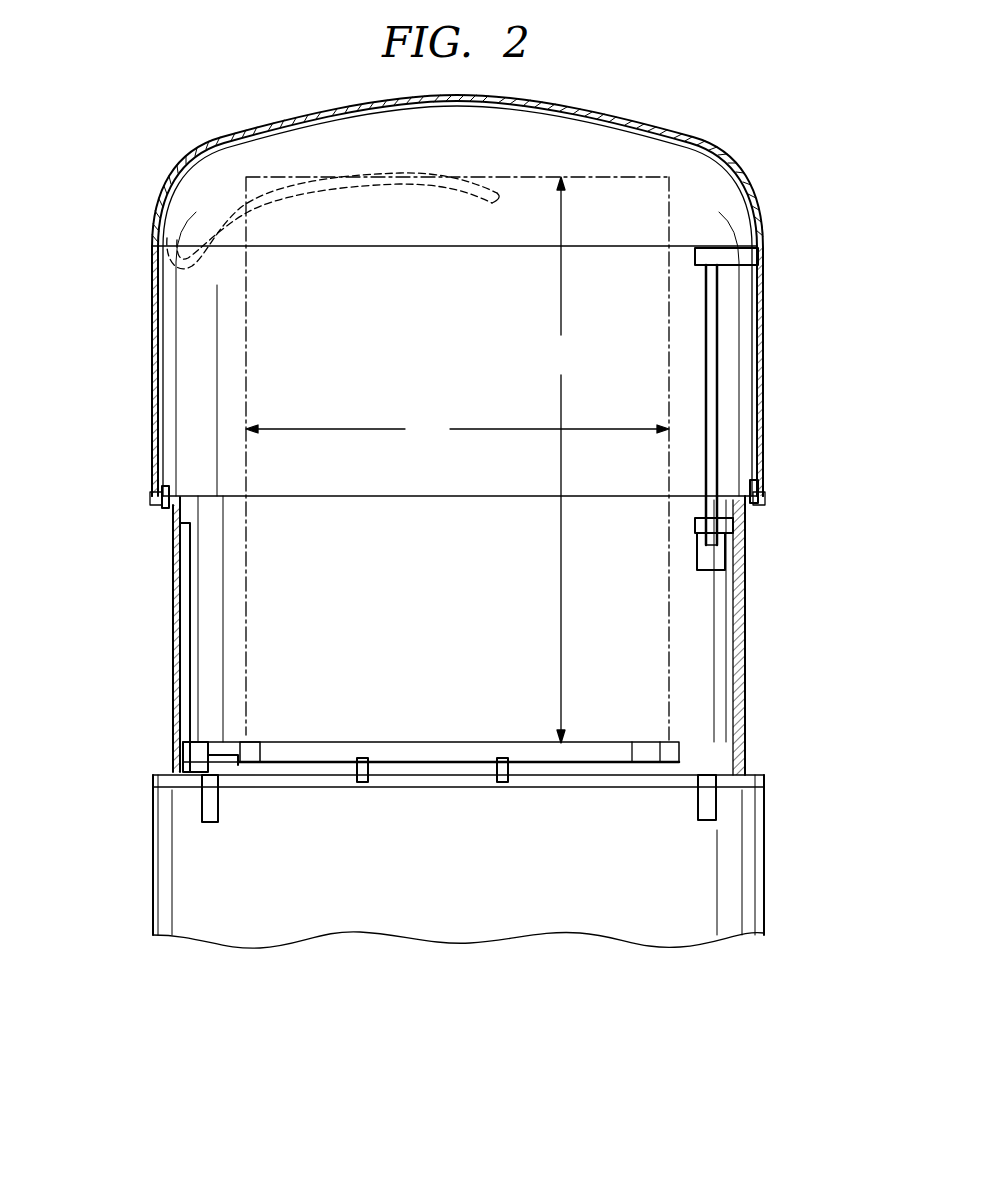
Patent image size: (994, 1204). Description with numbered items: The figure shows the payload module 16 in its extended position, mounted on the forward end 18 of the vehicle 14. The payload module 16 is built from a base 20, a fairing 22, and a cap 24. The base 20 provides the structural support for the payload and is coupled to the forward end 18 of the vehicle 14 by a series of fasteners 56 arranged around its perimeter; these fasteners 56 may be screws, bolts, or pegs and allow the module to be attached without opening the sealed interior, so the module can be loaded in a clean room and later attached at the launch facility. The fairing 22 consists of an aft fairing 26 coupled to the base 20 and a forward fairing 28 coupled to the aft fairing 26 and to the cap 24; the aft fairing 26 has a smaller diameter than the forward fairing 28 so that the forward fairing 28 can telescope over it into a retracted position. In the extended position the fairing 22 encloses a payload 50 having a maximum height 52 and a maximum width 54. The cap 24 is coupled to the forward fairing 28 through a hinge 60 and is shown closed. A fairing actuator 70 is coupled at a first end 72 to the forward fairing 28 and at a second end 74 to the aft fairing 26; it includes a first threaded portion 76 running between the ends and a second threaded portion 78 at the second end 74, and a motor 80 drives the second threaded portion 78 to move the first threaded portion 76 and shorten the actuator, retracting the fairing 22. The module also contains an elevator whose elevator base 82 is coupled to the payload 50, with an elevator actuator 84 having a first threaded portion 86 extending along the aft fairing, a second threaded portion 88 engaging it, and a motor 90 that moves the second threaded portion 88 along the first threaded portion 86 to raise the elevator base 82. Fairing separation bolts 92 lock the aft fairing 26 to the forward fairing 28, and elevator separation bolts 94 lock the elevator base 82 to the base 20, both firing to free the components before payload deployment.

The vehicle 14 is at (456, 945).
The payload module 16 is at (755, 93).
The forward end 18 is at (765, 848).
The base 20 is at (153, 788).
The fairing 22 is at (788, 380).
The cap 24 is at (680, 134).
The aft fairing 26 is at (176, 548).
The forward fairing 28 is at (152, 367).
The payload 50 is at (482, 177).
The maximum height 52 is at (563, 460).
The maximum width 54 is at (457, 429).
The fasteners 56 is at (220, 808).
The hinge 60 is at (292, 210).
The fairing actuator 70 is at (634, 324).
The first end 72 is at (774, 257).
The second end 74 is at (774, 589).
The first threaded portion 76 is at (705, 380).
The second threaded portion 78 is at (693, 528).
The motor 80 is at (697, 592).
The elevator base 82 is at (460, 741).
The elevator actuator 84 is at (290, 653).
The first threaded portion 86 is at (212, 590).
The second threaded portion 88 is at (183, 752).
The motor 90 is at (240, 740).
The fairing separation bolts 92 is at (162, 505).
The elevator separation bolts 94 is at (364, 786).